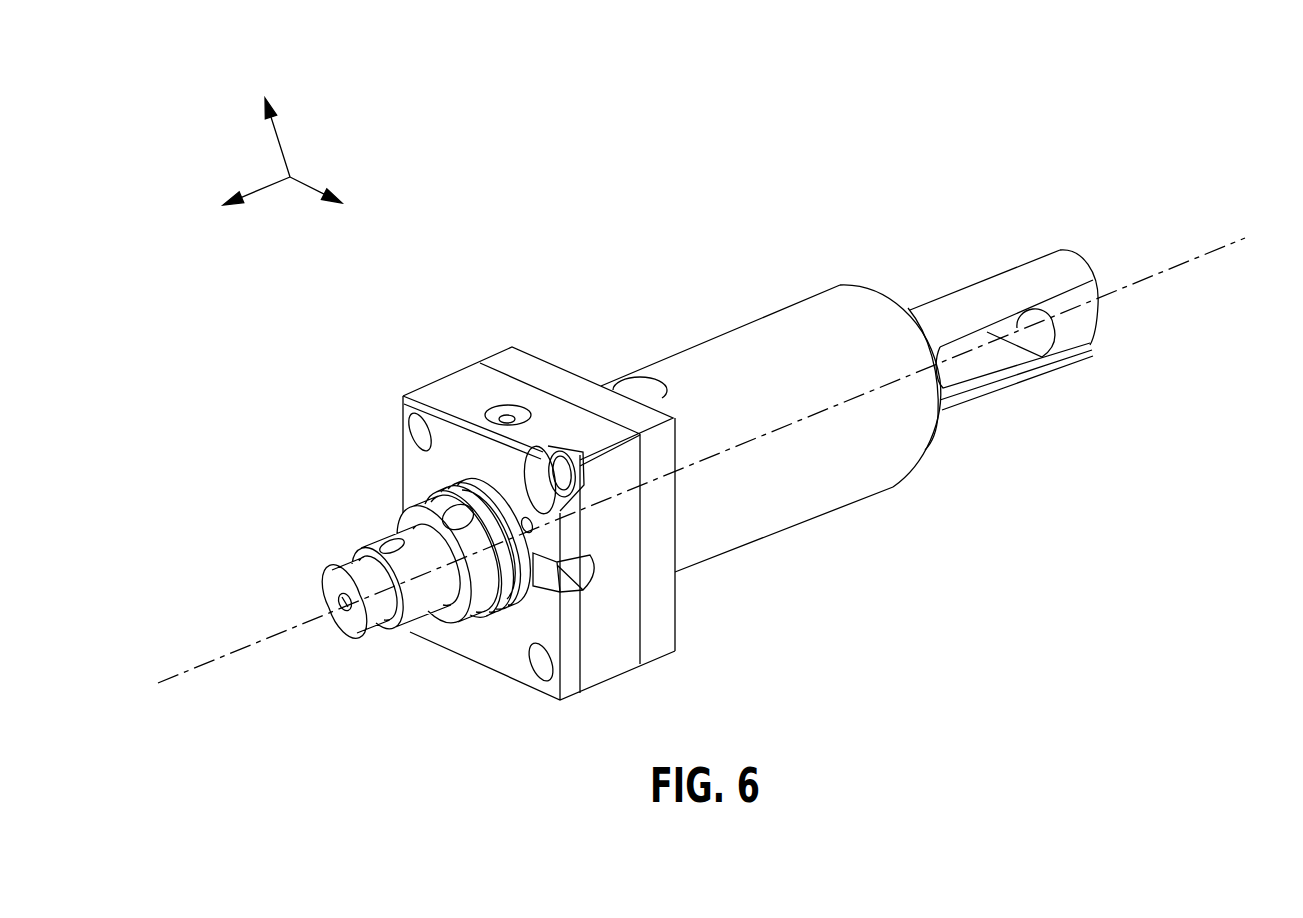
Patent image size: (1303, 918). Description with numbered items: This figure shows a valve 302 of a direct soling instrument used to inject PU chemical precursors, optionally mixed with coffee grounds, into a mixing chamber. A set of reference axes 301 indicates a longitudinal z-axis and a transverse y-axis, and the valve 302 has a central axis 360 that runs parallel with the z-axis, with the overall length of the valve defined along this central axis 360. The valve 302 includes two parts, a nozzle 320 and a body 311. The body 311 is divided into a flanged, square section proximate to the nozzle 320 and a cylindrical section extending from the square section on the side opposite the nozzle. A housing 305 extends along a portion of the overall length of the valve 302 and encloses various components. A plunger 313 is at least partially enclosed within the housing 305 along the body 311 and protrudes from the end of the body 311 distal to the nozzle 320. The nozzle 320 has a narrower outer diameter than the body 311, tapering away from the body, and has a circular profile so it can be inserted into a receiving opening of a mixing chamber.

The reference axes 301 is at (301, 131).
The valve 302 is at (1050, 172).
The housing 305 is at (753, 525).
The body 311 is at (825, 220).
The plunger 313 is at (970, 308).
The nozzle 320 is at (298, 570).
The central axis 360 is at (217, 652).